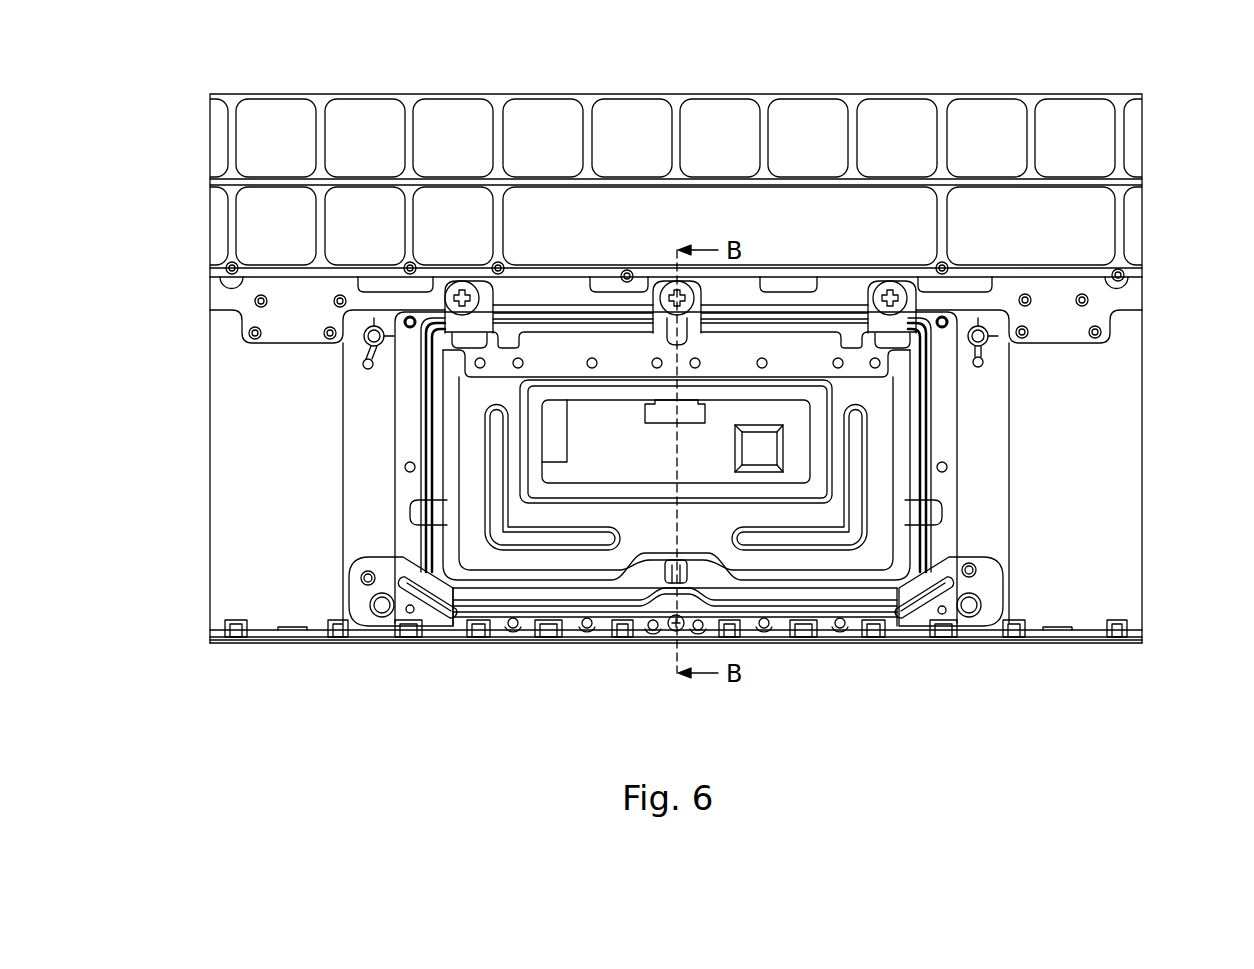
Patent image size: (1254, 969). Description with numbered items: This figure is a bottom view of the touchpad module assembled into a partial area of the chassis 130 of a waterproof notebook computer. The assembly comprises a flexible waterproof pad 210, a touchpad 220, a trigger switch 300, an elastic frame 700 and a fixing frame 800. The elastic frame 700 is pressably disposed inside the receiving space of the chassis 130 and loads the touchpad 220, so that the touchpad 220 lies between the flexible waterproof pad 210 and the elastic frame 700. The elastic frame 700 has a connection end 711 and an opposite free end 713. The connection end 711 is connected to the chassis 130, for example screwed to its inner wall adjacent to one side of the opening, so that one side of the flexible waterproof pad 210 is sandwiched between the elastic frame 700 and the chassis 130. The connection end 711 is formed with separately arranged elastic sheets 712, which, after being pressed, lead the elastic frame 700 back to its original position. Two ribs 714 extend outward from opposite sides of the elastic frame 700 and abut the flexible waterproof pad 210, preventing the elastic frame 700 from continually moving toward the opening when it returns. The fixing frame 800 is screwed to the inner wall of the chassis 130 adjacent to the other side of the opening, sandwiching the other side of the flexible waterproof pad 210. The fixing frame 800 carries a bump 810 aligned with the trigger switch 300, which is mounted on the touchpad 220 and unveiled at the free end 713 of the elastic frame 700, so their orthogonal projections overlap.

The chassis 130 is at (1115, 492).
The flexible waterproof pad 210 is at (903, 400).
The touchpad 220 is at (805, 450).
The trigger switch 300 is at (670, 560).
The elastic frame 700 is at (447, 428).
The connection end 711 is at (818, 342).
The elastic sheets 712 is at (652, 297).
The free end 713 is at (783, 602).
The ribs 714 is at (422, 513).
The fixing frame 800 is at (357, 592).
The bump 810 is at (670, 632).